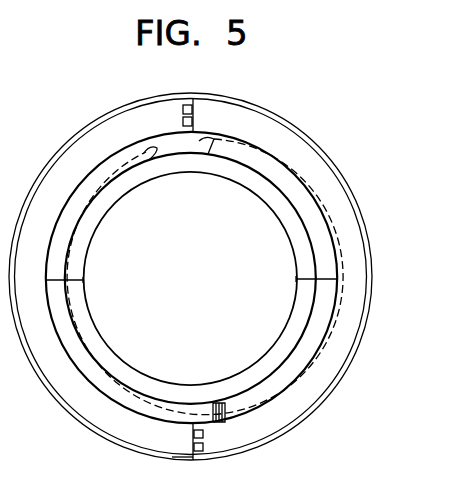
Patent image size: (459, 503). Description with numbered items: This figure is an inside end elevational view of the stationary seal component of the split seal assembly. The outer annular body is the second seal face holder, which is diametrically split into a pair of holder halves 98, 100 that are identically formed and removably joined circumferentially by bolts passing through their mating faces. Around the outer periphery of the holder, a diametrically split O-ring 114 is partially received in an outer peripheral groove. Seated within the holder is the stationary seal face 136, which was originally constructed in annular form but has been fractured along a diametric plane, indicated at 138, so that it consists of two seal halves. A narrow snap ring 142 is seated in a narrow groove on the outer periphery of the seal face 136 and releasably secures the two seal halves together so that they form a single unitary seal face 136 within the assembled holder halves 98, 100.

The holder half 98 is at (95, 142).
The holder half 100 is at (318, 383).
The diametrically split O-ring 114 is at (368, 233).
The stationary seal face 136 is at (320, 317).
The diametric fracture plane 138 is at (77, 280).
The narrow snap ring 142 is at (312, 224).